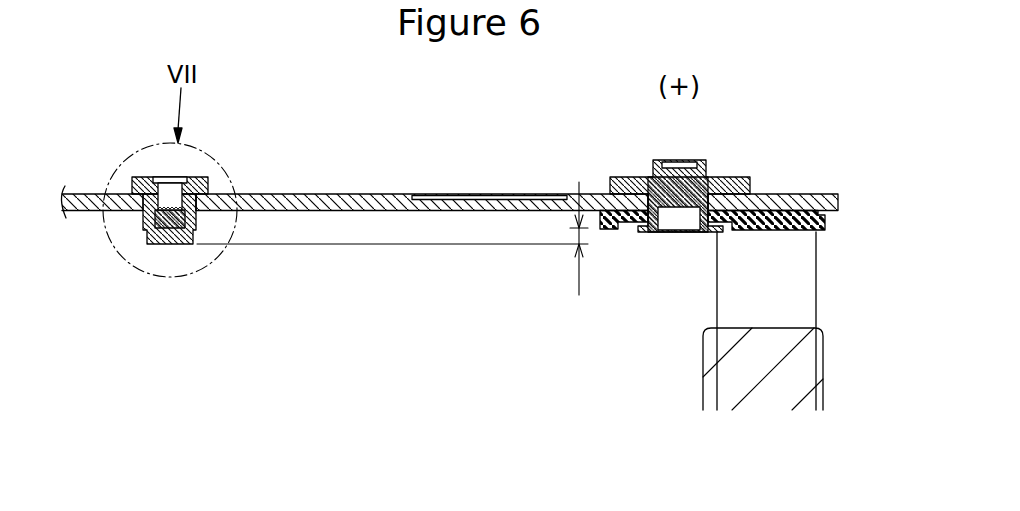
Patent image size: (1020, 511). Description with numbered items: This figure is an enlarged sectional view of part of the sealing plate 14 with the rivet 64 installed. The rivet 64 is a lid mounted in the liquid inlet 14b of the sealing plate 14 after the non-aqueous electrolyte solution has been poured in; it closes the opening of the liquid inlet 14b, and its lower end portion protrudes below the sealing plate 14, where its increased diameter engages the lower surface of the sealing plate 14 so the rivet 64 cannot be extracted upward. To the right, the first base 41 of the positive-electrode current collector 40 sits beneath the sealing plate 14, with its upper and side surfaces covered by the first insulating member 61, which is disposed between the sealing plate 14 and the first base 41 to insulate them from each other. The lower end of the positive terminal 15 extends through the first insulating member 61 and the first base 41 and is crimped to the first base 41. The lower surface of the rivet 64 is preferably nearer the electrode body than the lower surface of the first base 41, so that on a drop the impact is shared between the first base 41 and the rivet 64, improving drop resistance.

The sealing plate 14 is at (369, 193).
The liquid inlet 14b is at (146, 176).
The rivet 64 is at (193, 176).
The positive terminal 15 is at (680, 160).
The first insulating member 61 is at (823, 218).
The positive-electrode current collector 40 is at (818, 295).
The first base 41 is at (626, 230).